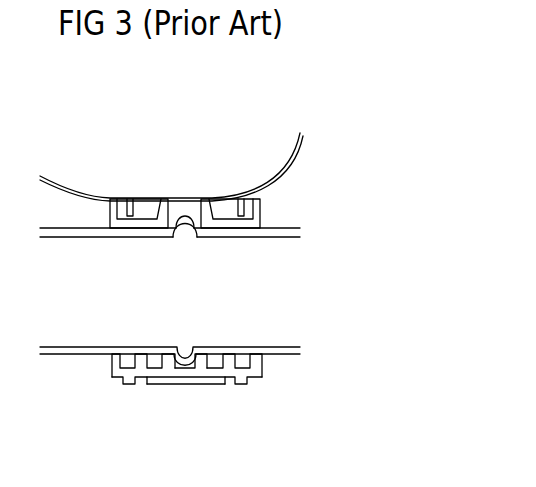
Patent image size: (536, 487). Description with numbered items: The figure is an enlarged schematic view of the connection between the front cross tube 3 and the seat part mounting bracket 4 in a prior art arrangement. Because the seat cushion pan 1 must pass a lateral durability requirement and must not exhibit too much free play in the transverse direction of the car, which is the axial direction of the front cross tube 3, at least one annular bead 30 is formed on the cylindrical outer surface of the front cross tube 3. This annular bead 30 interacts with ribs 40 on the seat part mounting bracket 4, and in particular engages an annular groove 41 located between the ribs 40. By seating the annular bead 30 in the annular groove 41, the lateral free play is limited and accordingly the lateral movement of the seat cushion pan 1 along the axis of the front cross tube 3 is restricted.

The seat cushion pan 1 is at (295, 158).
The front cross tube 3 is at (206, 224).
The annular bead 30 is at (189, 217).
The seat part mounting bracket 4 is at (191, 416).
The ribs 40 is at (128, 367).
The annular groove 41 is at (190, 367).